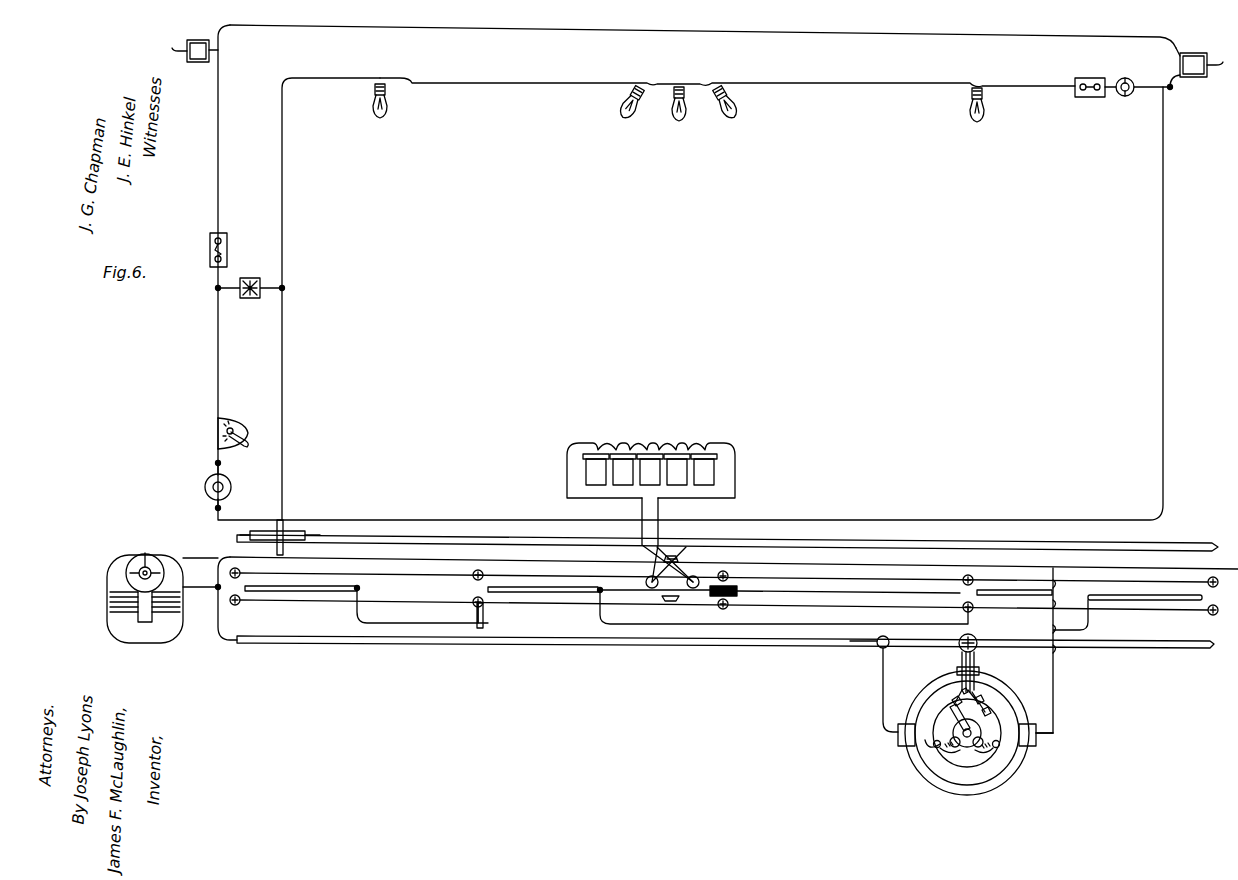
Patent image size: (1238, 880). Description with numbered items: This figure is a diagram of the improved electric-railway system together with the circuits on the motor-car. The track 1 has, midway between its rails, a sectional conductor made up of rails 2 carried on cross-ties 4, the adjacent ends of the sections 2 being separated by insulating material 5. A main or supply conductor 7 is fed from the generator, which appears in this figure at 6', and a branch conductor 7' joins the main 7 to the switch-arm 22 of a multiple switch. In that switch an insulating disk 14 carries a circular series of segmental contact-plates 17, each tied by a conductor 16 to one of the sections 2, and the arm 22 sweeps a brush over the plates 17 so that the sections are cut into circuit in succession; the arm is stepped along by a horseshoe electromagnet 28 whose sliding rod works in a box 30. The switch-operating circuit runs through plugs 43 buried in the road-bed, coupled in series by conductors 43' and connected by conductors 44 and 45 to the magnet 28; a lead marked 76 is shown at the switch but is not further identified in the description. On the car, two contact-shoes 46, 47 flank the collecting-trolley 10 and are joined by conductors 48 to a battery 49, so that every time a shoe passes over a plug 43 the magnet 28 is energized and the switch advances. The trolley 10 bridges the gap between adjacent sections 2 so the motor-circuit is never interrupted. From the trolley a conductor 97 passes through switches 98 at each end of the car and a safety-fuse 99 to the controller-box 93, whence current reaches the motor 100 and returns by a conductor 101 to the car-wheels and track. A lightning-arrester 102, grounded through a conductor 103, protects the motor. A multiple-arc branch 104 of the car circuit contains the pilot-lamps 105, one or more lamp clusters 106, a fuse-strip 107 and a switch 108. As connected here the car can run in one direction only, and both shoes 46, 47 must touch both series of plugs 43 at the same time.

The conductor 97 is at (1172, 315).
The switches 98 is at (1193, 83).
The safety-fuse 99 is at (227, 250).
The lightning-arrester 102 is at (250, 298).
The conductor 103 is at (282, 368).
The controller-box 93 is at (235, 414).
The motor 100 is at (228, 480).
The conductor 101 is at (240, 518).
The multiple-arc branch 104 is at (775, 75).
The pilot-lamps 105 is at (680, 116).
The clusters 106 is at (678, 114).
The fuse-strip 107 is at (1090, 97).
The switch 108 is at (1131, 80).
The battery 49 is at (651, 460).
The conductors 48 is at (655, 540).
The contact-shoe 47 is at (675, 552).
The contact-shoe 46 is at (676, 603).
The conductor 45 is at (474, 613).
The conductor 44 is at (500, 613).
The plugs 43 is at (724, 591).
The conductors 43' is at (648, 584).
The track 1 is at (398, 645).
The rails 2 is at (318, 594).
The trolley 10 is at (723, 570).
The insulating material 5 is at (736, 587).
The conductor 16 is at (1105, 622).
The conductor 7 is at (728, 593).
The cross-ties 4 is at (1218, 588).
The motor 6' is at (154, 598).
The cable 76 is at (976, 662).
The contact plates 17 is at (985, 700).
The disk 14 is at (992, 716).
The arm 22 is at (948, 712).
The electromagnet 28 is at (966, 752).
The box 30 is at (925, 768).
The branch conductor 7' is at (1057, 704).